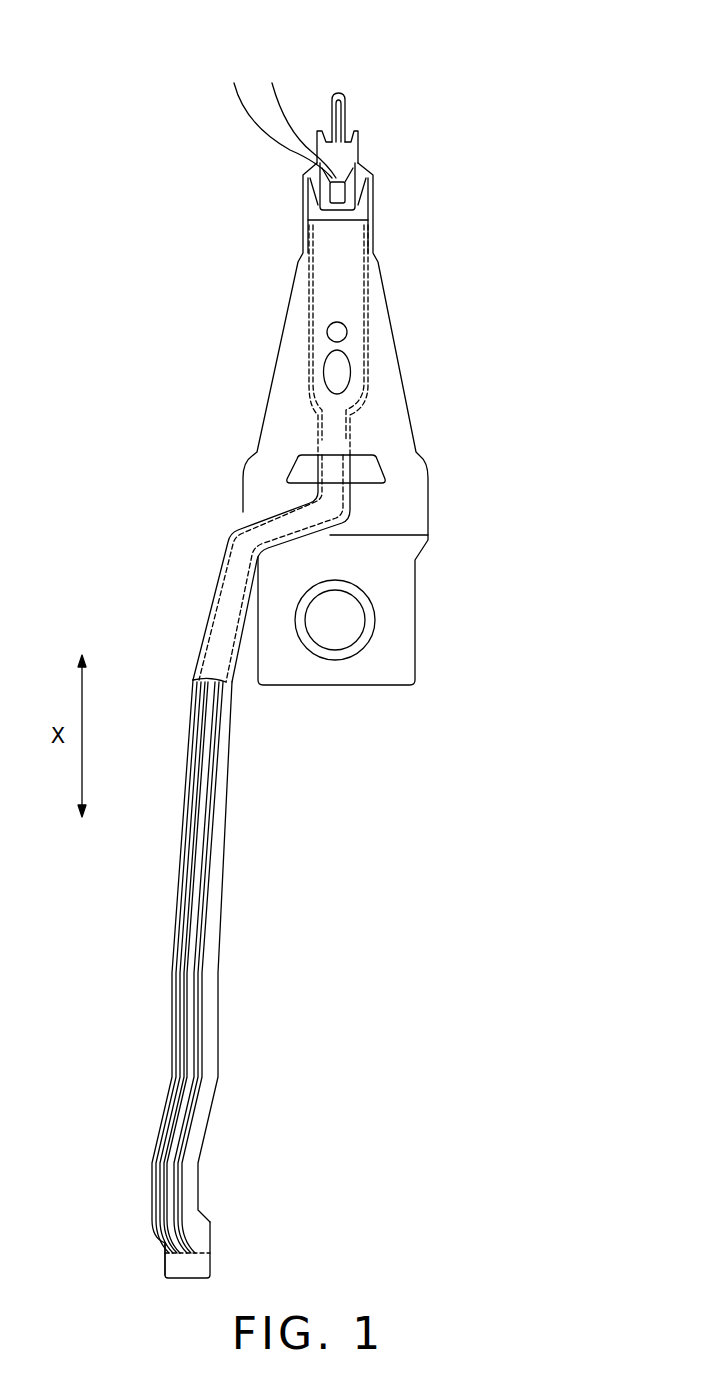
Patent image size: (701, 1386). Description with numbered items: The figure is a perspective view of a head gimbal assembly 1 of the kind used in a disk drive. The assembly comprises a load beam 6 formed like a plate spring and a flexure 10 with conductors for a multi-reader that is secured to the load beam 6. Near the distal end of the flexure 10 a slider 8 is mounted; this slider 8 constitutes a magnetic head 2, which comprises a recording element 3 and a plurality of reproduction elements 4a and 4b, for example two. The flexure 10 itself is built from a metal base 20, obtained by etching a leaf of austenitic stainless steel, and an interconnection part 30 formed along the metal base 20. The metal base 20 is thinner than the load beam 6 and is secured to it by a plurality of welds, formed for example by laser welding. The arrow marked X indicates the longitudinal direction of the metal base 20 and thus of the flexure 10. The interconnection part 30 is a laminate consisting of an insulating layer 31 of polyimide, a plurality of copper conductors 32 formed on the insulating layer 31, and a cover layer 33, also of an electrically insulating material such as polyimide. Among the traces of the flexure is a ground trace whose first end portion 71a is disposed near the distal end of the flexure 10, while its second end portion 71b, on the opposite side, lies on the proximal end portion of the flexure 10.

The head gimbal assembly 1 is at (215, 382).
The magnetic head 2 is at (325, 57).
The recording element 3 is at (330, 142).
The reproduction element 4a is at (296, 118).
The reproduction element 4b is at (275, 118).
The load beam 6 is at (387, 408).
The slider 8 is at (340, 195).
The flexure 10 is at (230, 603).
The metal base 20 is at (222, 852).
The interconnection part 30 is at (353, 707).
The insulating layer 31 is at (222, 805).
The conductors 32 is at (193, 747).
The cover layer 33 is at (232, 682).
The first end portion 71a is at (336, 187).
The second end portion 71b is at (172, 1252).